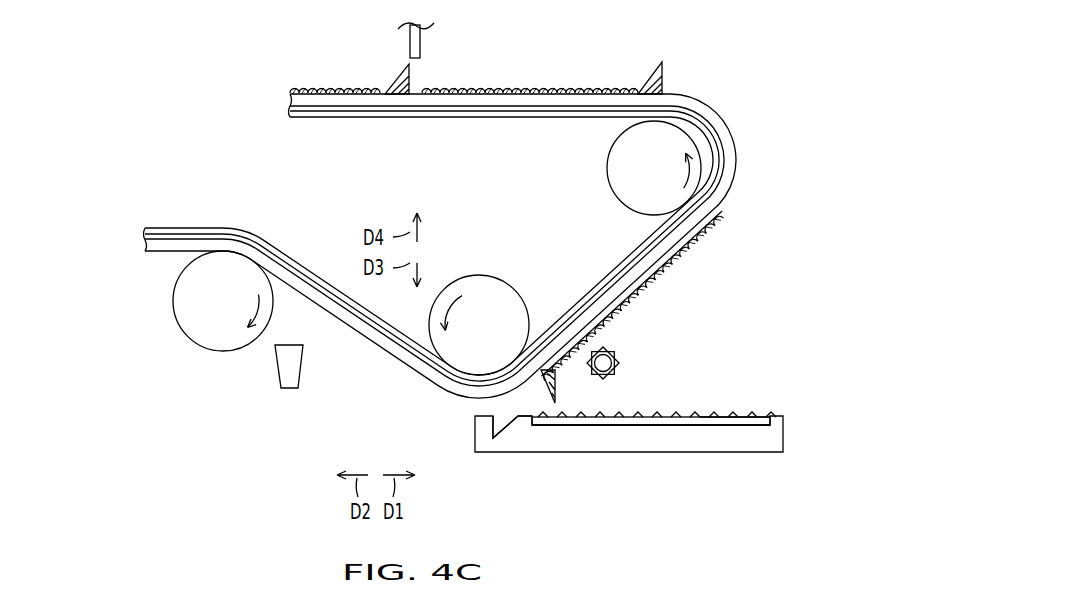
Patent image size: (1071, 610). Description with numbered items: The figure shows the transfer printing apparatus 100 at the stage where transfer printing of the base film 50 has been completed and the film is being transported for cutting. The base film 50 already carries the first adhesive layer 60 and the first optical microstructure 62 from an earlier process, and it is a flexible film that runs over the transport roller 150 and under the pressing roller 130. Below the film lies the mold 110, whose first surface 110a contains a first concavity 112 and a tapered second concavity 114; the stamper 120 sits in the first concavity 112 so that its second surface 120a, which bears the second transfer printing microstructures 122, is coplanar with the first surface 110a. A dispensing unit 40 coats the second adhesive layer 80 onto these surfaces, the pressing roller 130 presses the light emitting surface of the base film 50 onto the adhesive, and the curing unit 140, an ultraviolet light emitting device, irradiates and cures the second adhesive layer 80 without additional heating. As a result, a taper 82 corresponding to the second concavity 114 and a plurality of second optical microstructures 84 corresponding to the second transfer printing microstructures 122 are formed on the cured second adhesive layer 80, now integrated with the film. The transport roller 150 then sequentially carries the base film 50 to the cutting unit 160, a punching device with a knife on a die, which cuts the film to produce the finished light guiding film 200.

The transfer printing apparatus 100 is at (140, 155).
The base film 50 is at (167, 247).
The first adhesive layer 60 is at (420, 246).
The first optical microstructure 62 is at (157, 227).
The transport roller 150 is at (243, 287).
The pressing roller 130 is at (478, 292).
The light guiding film 200 is at (655, 121).
The cutting unit 160 is at (420, 47).
The second adhesive layer 80 is at (650, 312).
The second optical microstructures 84 is at (662, 280).
The taper 82 is at (555, 390).
The curing unit 140 is at (608, 363).
The dispensing unit 40 is at (295, 367).
The mold 110 is at (582, 429).
The second concavity 114 is at (507, 436).
The first surface 110a is at (522, 413).
The first concavity 112 is at (593, 432).
The stamper 120 is at (654, 429).
The second transfer printing microstructures 122 is at (635, 412).
The second surface 120a is at (742, 413).